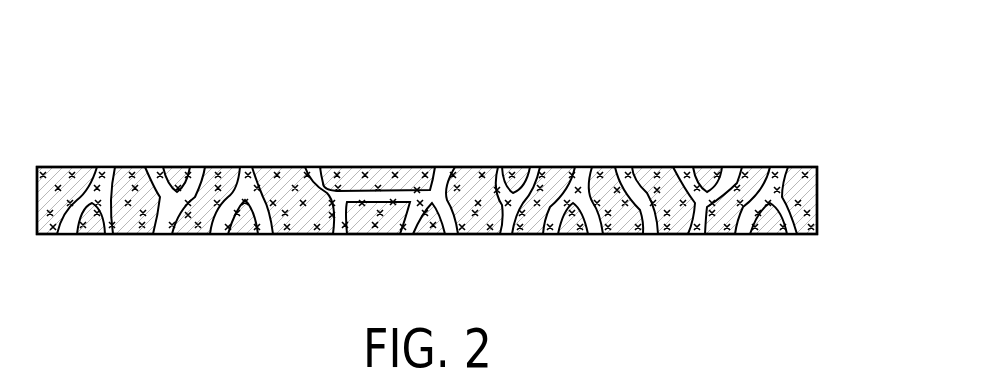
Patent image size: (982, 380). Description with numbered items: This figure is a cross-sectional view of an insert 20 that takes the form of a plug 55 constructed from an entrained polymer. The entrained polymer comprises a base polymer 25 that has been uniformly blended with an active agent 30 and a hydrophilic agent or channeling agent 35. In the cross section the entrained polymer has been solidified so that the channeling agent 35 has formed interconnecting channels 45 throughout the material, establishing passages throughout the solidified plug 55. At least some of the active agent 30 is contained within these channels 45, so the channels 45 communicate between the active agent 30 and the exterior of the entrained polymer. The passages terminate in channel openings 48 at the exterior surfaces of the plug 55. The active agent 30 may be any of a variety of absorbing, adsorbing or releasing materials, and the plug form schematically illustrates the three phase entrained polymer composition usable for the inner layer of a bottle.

The insert 20 is at (630, 148).
The base polymer 25 is at (61, 173).
The active agent 30 is at (340, 236).
The channeling agent 35 is at (203, 171).
The interconnecting channels 45 is at (152, 171).
The channel openings 48 is at (540, 168).
The plug 55 is at (830, 189).